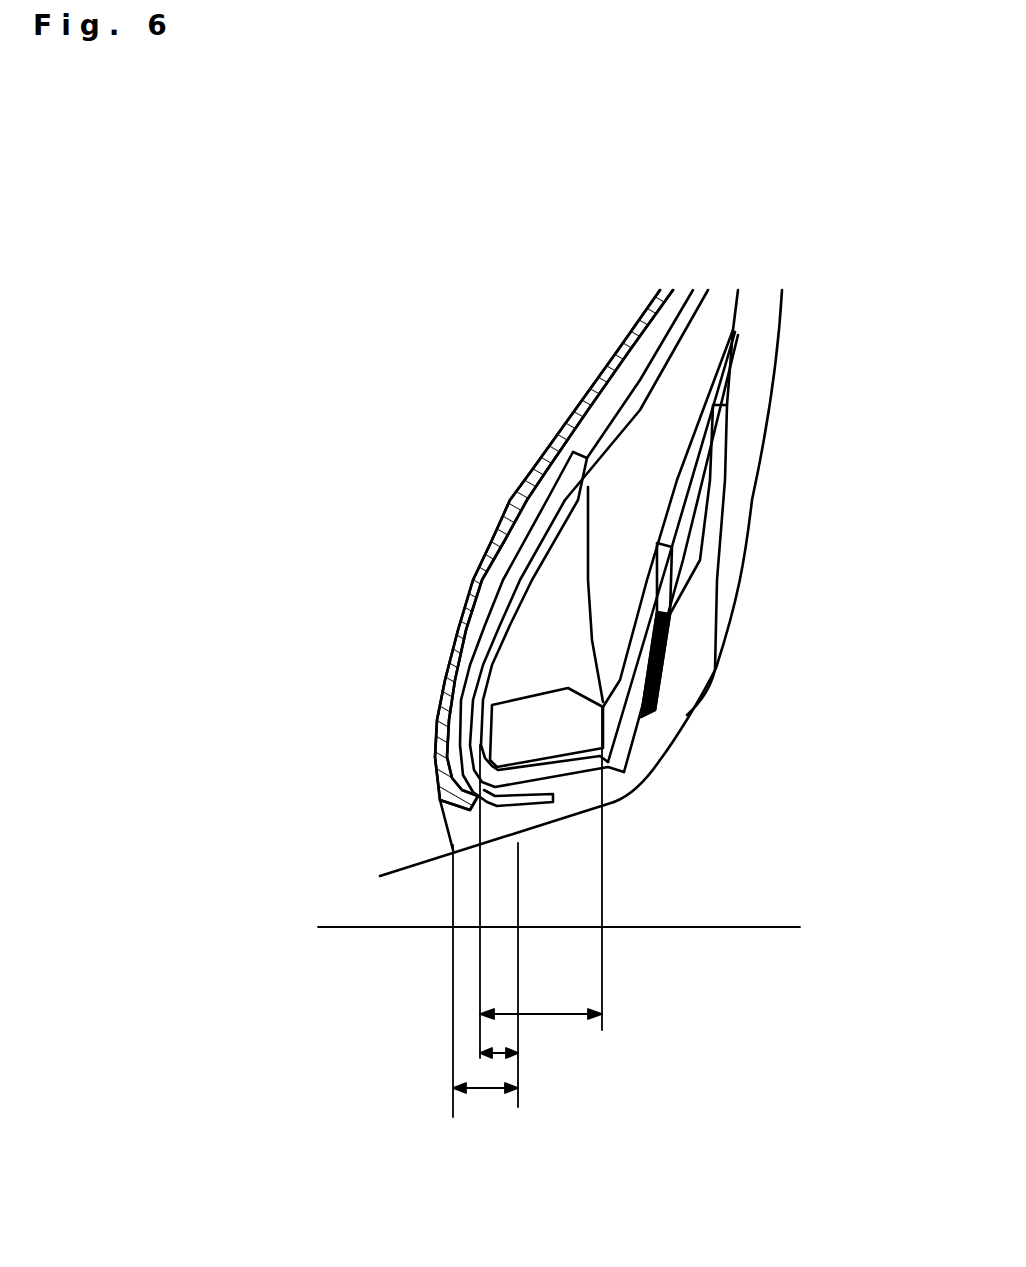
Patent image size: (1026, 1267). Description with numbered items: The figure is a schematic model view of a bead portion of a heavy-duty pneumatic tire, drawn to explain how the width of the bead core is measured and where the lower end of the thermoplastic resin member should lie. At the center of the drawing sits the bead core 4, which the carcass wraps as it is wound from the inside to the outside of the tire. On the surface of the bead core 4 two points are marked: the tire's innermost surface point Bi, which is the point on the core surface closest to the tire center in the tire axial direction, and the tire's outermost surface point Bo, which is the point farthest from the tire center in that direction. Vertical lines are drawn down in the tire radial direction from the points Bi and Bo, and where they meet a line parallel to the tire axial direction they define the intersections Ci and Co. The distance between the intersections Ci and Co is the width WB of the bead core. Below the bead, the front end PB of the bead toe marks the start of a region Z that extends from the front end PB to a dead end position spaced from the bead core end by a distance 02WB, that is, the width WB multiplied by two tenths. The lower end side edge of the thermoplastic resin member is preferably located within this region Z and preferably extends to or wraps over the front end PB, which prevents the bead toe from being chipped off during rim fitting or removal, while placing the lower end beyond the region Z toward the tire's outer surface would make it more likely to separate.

The bead core 4 is at (560, 715).
The tire's innermost surface point Bi is at (478, 752).
The tire's outermost surface point Bo is at (603, 718).
The front end of the bead toe PB is at (349, 877).
The intersection Ci is at (477, 928).
The intersection Co is at (602, 927).
The width of the bead core WB is at (541, 996).
The distance of 0.2 times the bead core width 02WB is at (510, 1053).
The region Z is at (485, 1107).